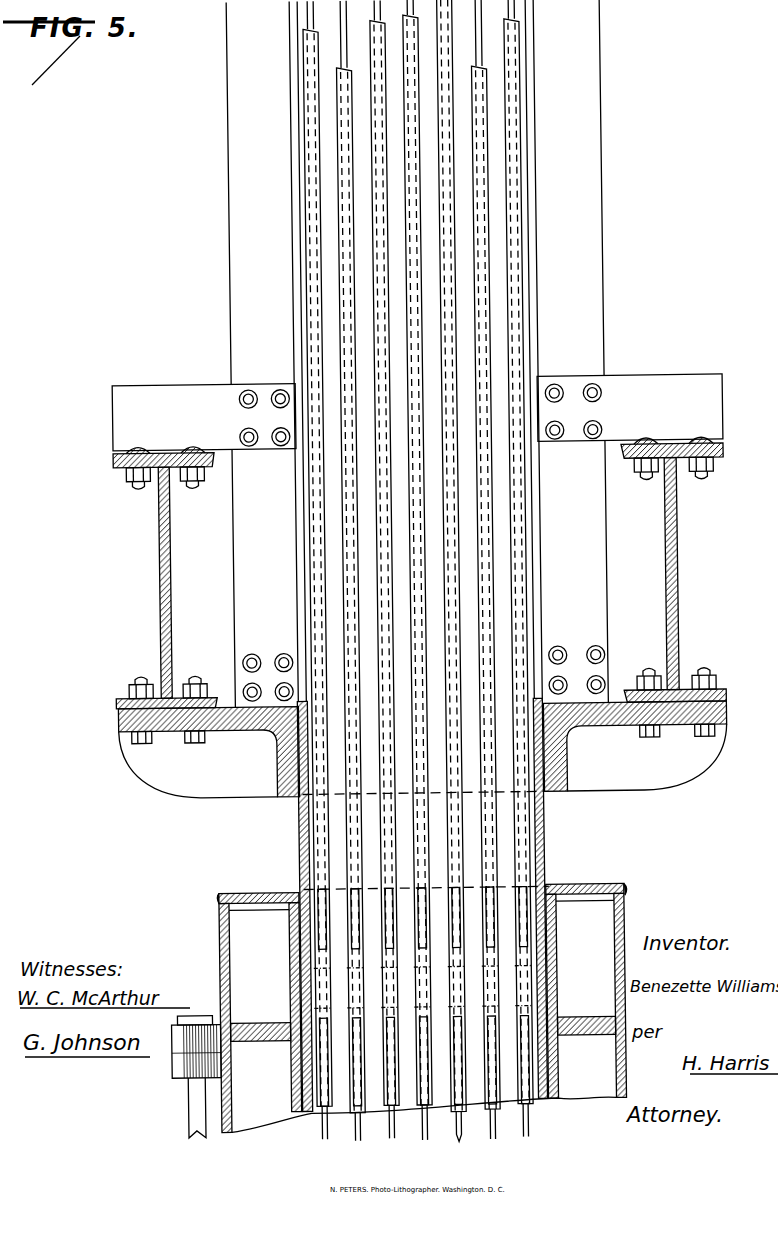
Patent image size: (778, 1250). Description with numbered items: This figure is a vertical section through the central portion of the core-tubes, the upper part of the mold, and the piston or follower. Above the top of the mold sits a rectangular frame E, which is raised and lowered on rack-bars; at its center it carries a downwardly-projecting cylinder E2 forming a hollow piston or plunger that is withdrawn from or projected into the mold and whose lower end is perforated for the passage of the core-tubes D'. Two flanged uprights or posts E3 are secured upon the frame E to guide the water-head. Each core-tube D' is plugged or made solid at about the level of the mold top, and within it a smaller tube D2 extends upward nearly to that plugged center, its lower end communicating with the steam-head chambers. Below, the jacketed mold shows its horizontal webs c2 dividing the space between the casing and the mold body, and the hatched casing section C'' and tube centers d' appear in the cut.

The rectangular frame E is at (203, 603).
The flanged upright E3 is at (262, 601).
The downwardly-projecting cylinder E2 is at (298, 832).
The cap C'' is at (422, 890).
The core-tube D' is at (418, 556).
The rod d' is at (418, 556).
The smaller tube D2 is at (372, 1143).
The horizontal web c2 is at (590, 995).